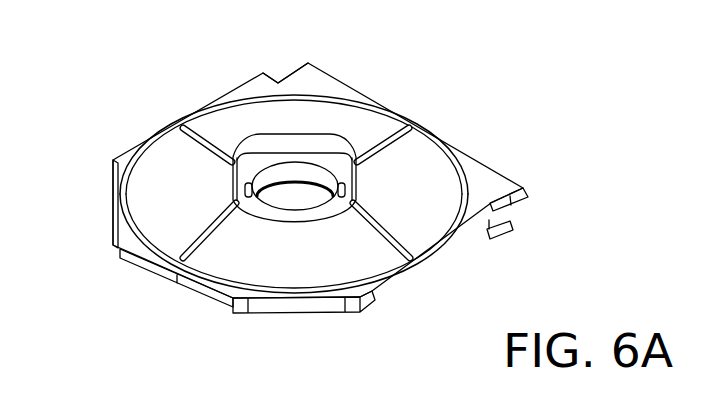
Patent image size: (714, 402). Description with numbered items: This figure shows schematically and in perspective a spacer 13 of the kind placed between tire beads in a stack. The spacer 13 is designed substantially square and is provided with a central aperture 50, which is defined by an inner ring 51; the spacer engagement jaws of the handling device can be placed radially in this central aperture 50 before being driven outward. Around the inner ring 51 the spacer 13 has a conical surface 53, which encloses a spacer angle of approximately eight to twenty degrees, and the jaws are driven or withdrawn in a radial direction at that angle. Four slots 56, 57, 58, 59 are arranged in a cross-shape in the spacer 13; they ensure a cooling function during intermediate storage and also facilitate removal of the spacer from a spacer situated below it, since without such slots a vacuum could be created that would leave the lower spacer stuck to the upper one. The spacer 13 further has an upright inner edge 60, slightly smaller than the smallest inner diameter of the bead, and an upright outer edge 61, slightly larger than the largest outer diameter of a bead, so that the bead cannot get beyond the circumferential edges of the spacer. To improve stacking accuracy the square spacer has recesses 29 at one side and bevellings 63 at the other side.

The spacer 13 is at (153, 136).
The recesses 29 is at (288, 74).
The central aperture 50 is at (150, 246).
The inner ring 51 is at (157, 167).
The conical surface 53 is at (297, 258).
The slot 56 is at (212, 231).
The slot 57 is at (385, 236).
The slot 58 is at (373, 141).
The slot 59 is at (241, 147).
The upright inner edge 60 is at (359, 172).
The upright outer edge 61 is at (465, 150).
The bevellings 63 is at (110, 200).